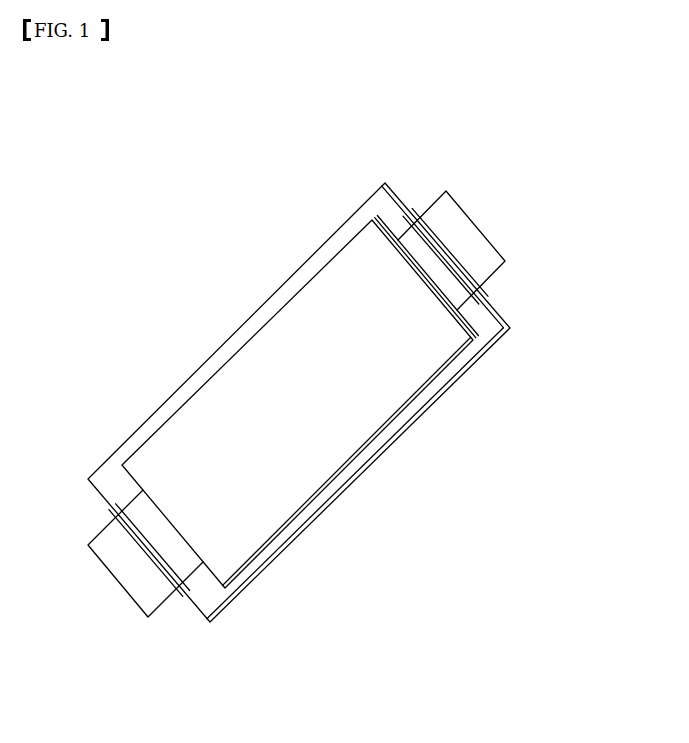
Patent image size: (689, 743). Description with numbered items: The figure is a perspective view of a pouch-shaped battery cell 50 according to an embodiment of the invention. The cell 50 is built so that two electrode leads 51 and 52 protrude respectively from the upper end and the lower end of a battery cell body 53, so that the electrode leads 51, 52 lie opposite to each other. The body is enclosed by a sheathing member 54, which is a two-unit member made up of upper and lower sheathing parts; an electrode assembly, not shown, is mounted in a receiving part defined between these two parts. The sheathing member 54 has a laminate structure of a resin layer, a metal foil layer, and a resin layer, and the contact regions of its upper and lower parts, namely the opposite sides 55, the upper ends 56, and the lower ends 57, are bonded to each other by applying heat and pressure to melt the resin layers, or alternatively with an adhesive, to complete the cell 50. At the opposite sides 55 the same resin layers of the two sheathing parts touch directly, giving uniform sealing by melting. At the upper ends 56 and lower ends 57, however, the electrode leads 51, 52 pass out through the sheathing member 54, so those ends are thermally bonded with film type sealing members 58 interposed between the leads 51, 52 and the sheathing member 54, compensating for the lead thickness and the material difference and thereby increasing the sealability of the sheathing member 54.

The pouch-shaped battery cell 50 is at (99, 204).
The electrode lead 51 is at (477, 229).
The electrode lead 52 is at (133, 580).
The battery cell body 53 is at (257, 356).
The sheathing member 54 is at (375, 189).
The opposite sides 55 is at (378, 455).
The upper ends 56 is at (113, 476).
The lower ends 57 is at (504, 325).
The film type sealing member 58 is at (420, 212).